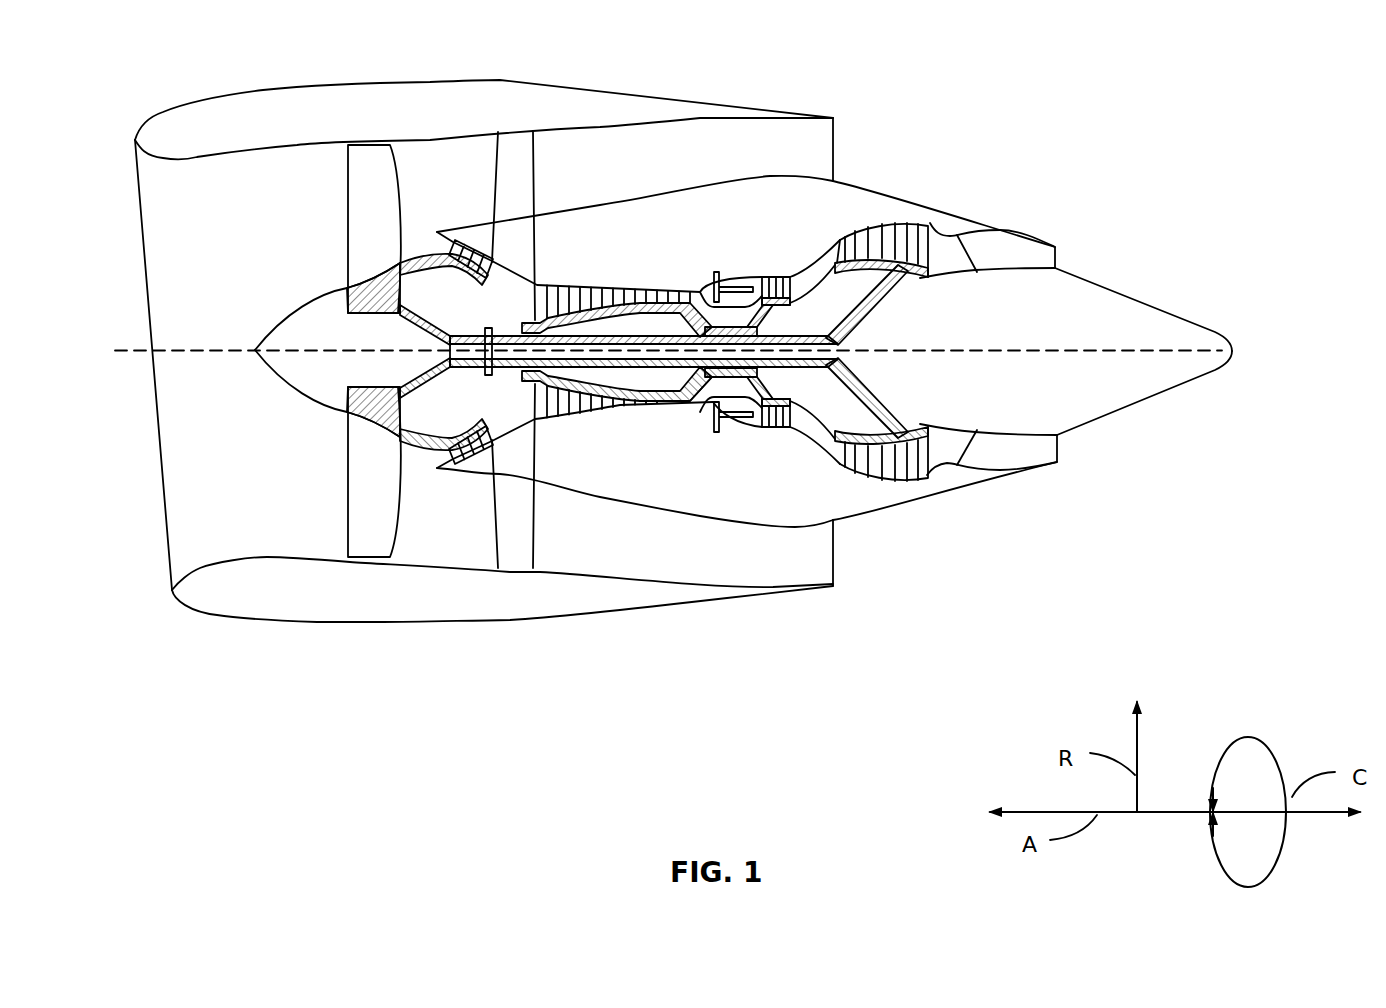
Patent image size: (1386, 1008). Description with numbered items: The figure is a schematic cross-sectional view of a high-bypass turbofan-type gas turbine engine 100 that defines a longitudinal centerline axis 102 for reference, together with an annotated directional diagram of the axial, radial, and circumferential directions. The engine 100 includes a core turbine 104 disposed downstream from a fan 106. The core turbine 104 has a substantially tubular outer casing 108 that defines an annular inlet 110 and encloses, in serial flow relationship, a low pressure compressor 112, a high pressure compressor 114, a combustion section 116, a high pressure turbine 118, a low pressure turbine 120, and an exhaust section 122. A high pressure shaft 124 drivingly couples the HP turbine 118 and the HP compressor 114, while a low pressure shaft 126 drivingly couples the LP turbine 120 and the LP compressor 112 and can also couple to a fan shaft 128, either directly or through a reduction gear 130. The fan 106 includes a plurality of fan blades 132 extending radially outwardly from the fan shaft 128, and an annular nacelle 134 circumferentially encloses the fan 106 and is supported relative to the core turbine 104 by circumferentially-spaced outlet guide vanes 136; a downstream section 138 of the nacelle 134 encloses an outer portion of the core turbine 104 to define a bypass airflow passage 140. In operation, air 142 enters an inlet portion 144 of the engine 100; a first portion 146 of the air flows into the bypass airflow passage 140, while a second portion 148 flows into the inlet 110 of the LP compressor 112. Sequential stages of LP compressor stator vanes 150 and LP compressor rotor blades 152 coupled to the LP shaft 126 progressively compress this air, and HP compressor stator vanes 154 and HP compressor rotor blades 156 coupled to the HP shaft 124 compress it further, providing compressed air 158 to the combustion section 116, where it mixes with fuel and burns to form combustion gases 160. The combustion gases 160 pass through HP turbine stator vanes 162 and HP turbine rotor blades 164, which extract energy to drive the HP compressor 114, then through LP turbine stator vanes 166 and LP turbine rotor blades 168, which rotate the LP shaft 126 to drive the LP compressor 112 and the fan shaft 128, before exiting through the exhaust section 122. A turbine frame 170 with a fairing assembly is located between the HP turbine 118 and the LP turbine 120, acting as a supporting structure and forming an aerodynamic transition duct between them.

The gas turbine engine 100 is at (975, 80).
The centerline axis 102 is at (982, 348).
The core turbine 104 is at (663, 228).
The fan 106 is at (267, 212).
The outer casing 108 is at (678, 514).
The annular inlet 110 is at (440, 455).
The low pressure compressor 112 is at (490, 440).
The high pressure compressor 114 is at (568, 420).
The combustion section 116 is at (728, 424).
The high pressure turbine 118 is at (797, 410).
The low pressure turbine 120 is at (915, 475).
The exhaust section 122 is at (1067, 249).
The high pressure shaft 124 is at (788, 314).
The low pressure shaft 126 is at (502, 336).
The fan shaft 128 is at (397, 315).
The reduction gear 130 is at (503, 395).
The fan blades 132 is at (347, 488).
The nacelle 134 is at (400, 82).
The outlet guide vanes 136 is at (535, 177).
The downstream section 138 is at (740, 92).
The bypass airflow passage 140 is at (660, 154).
The air 142 is at (115, 350).
The inlet portion 144 is at (167, 560).
The first portion of the air 146 is at (447, 173).
The second portion of the air 148 is at (488, 263).
The LP compressor stator vanes 150 is at (462, 462).
The LP compressor rotor blades 152 is at (460, 462).
The HP compressor stator vanes 154 is at (663, 410).
The HP compressor rotor blades 156 is at (667, 407).
The compressed air 158 is at (716, 304).
The combustion gases 160 is at (812, 267).
The HP turbine stator vanes 162 is at (767, 417).
The HP turbine rotor blades 164 is at (777, 412).
The LP turbine stator vanes 166 is at (837, 242).
The LP turbine rotor blades 168 is at (847, 236).
The turbine frame 170 is at (825, 258).